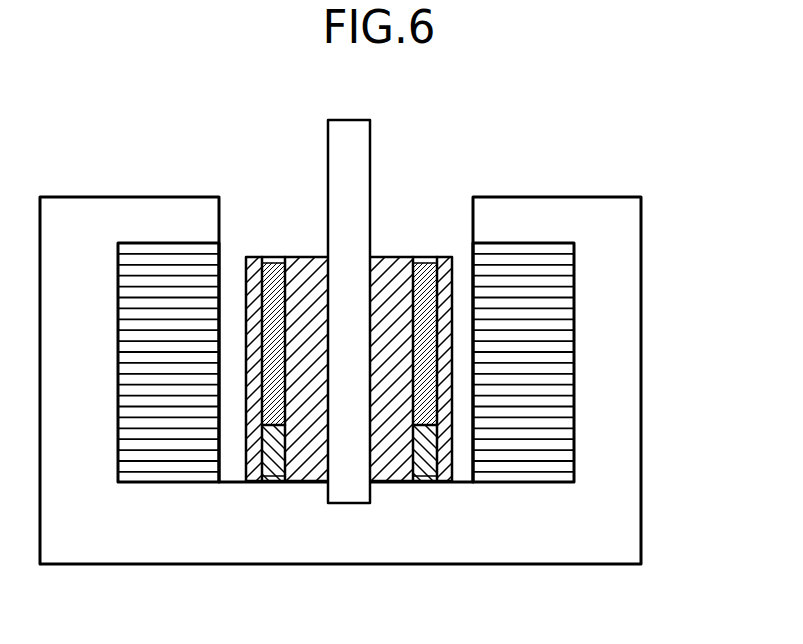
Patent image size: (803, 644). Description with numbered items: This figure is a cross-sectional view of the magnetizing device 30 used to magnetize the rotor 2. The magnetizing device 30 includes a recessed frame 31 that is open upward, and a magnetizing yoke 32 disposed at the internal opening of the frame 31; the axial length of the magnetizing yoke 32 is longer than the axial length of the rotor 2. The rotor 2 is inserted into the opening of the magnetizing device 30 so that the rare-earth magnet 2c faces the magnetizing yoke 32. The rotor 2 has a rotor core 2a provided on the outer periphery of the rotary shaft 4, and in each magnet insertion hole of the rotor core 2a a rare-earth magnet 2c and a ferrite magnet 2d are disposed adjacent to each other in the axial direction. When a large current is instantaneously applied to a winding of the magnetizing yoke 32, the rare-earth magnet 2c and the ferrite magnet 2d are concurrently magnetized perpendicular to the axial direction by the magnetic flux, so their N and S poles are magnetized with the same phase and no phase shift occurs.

The rotor 2 is at (332, 382).
The rotor core 2a is at (393, 440).
The rare-earth magnet 2c is at (267, 373).
The ferrite magnet 2d is at (272, 465).
The rotary shaft 4 is at (360, 150).
The magnetizing device 30 is at (375, 327).
The frame 31 is at (675, 308).
The magnetizing yoke 32 is at (558, 360).